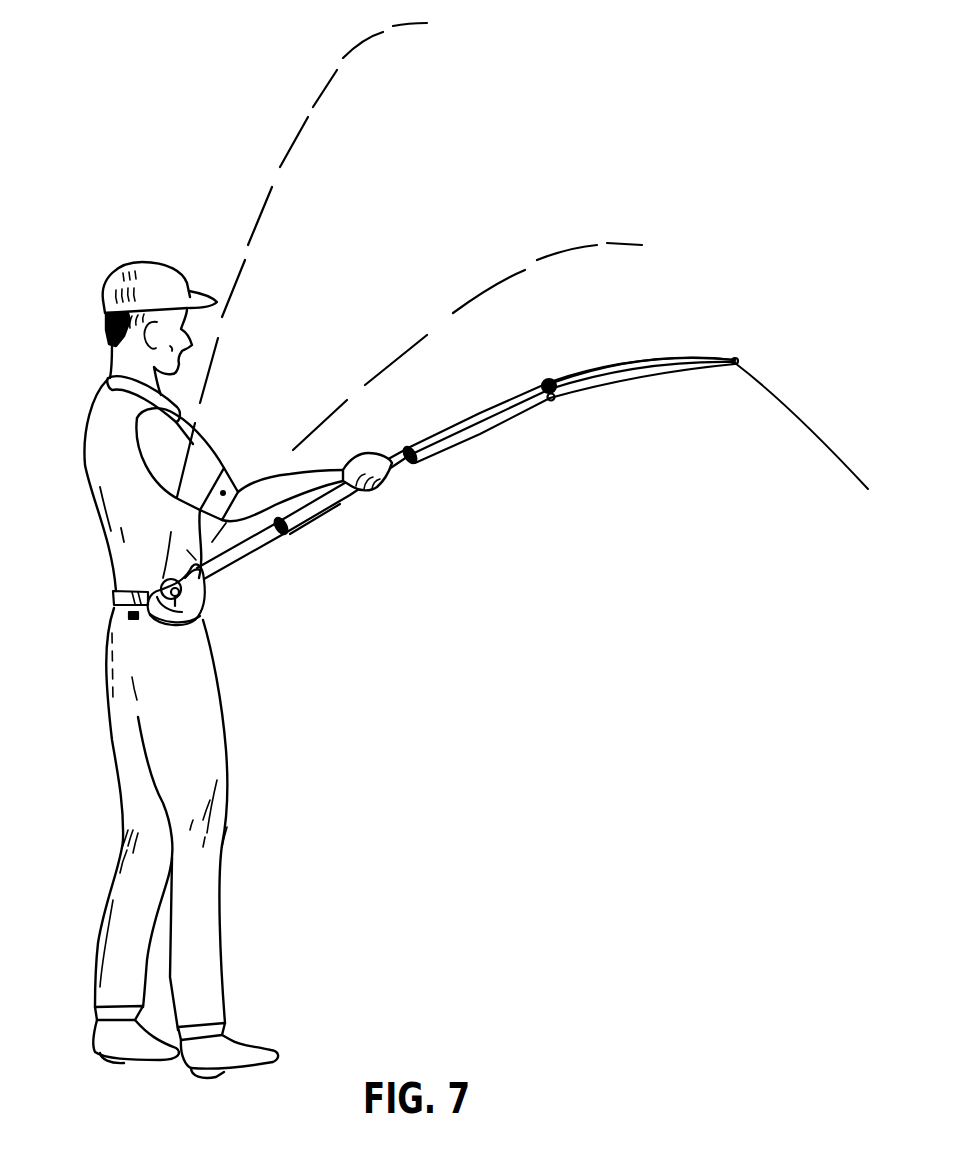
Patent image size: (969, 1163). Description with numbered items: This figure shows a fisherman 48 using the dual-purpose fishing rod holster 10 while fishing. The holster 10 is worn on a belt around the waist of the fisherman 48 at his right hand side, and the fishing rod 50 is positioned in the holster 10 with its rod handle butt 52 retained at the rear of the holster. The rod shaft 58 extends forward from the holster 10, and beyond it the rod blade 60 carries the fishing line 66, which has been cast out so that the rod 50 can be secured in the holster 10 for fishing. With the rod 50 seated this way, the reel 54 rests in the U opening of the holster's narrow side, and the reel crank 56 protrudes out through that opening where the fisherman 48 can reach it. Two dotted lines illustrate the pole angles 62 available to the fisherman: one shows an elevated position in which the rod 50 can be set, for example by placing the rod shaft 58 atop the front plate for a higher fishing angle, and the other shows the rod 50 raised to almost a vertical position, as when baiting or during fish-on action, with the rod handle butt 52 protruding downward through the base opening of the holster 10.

The dual-purpose fishing rod holster 10 is at (213, 603).
The fisherman 48 is at (97, 414).
The fishing rod 50 is at (413, 447).
The rod handle butt 52 is at (116, 597).
The reel 54 is at (157, 578).
The reel crank 56 is at (200, 614).
The rod shaft 58 is at (310, 516).
The rod blade 60 is at (665, 352).
The pole angles 62 is at (320, 96).
The fishing line 66 is at (797, 418).